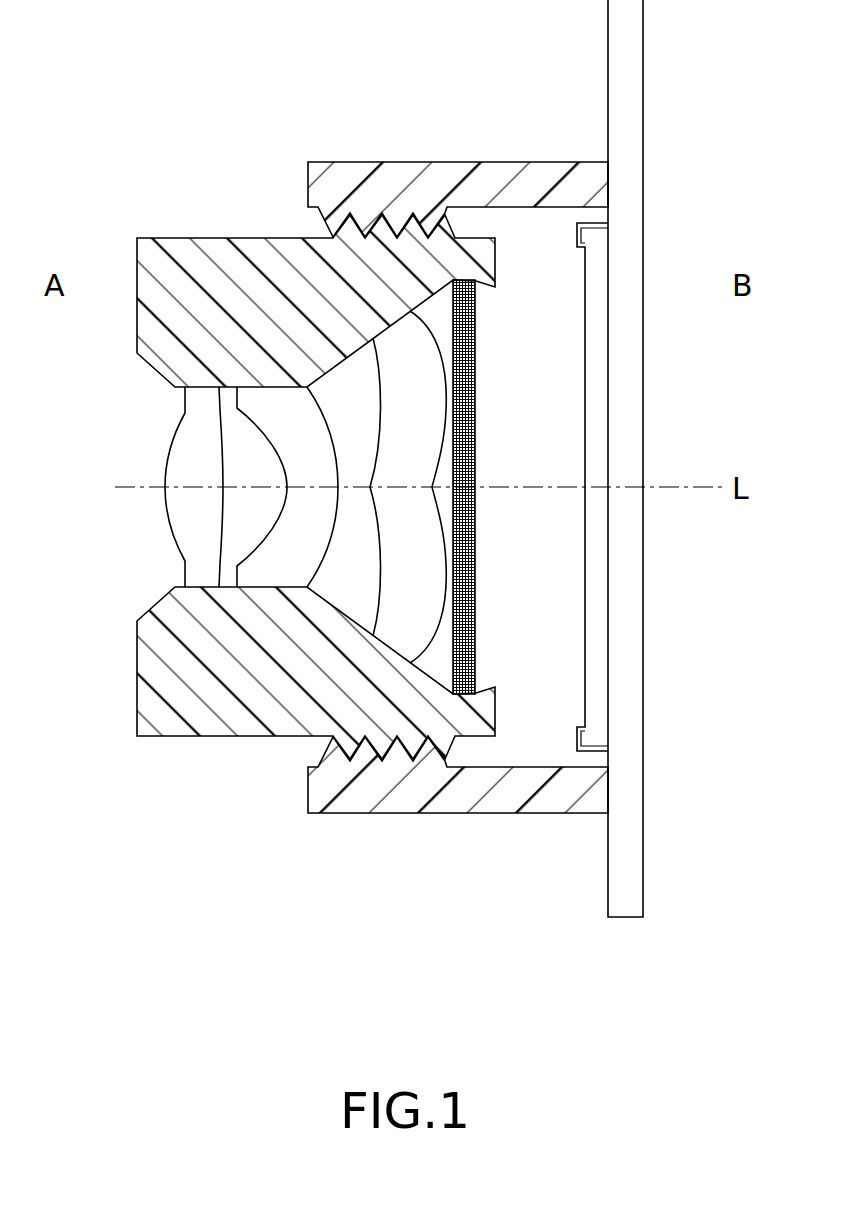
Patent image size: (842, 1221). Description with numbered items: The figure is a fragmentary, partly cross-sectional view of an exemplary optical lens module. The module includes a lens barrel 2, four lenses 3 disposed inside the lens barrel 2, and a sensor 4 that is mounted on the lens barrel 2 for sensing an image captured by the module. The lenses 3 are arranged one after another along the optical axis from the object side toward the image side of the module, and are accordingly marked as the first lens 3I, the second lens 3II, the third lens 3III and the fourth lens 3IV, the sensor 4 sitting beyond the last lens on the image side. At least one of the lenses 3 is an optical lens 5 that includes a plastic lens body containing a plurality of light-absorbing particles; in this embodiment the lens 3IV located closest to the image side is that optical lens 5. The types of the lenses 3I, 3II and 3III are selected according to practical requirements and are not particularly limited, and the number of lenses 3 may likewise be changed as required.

The lens barrel 2 is at (205, 238).
The lenses 3 is at (334, 647).
The first lens 3I is at (198, 572).
The second lens 3II is at (290, 570).
The third lens 3III is at (398, 637).
The fourth lens 3IV is at (490, 610).
The optical lens 5 is at (464, 487).
The sensor 4 is at (582, 291).